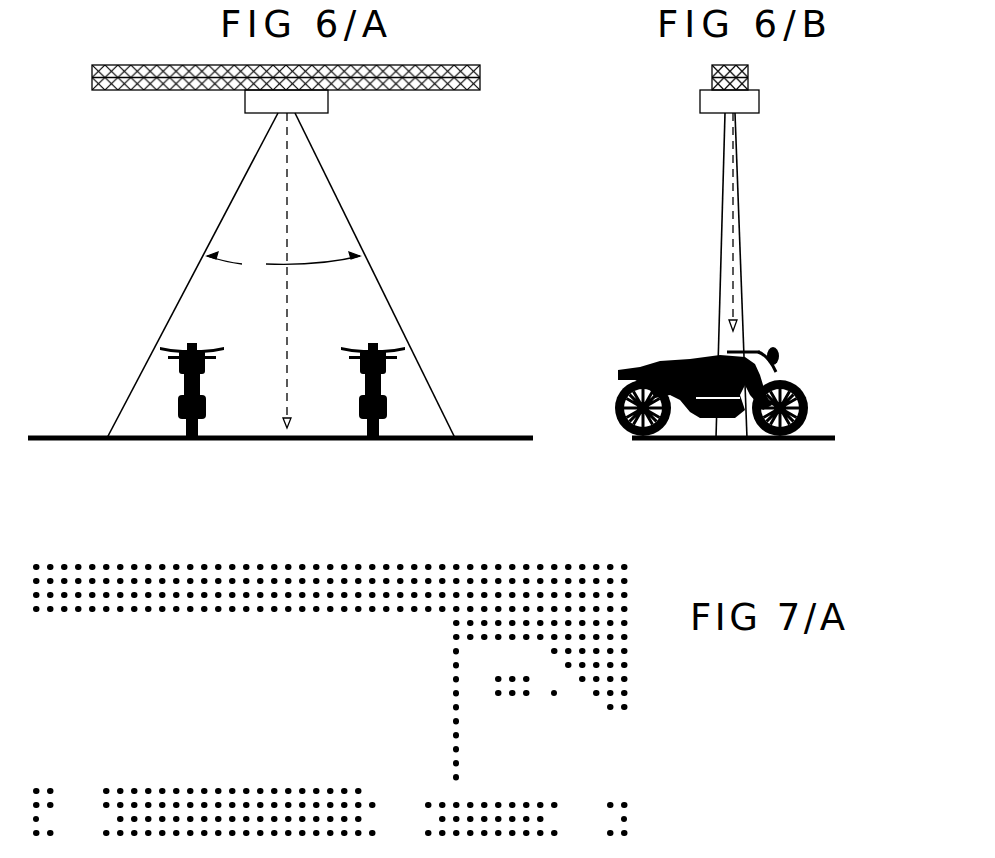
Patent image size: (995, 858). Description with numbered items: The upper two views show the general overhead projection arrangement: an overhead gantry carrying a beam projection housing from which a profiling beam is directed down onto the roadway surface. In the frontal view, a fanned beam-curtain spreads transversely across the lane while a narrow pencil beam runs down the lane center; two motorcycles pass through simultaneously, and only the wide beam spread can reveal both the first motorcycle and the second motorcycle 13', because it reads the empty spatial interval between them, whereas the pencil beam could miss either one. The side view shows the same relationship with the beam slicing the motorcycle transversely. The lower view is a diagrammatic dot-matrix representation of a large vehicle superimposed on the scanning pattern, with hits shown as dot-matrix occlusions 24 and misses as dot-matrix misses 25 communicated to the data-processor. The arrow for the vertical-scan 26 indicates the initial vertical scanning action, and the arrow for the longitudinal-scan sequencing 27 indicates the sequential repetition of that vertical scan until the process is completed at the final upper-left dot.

The motorcycle 13' is at (350, 391).
The longitudinal-scan sequencing 27 is at (567, 547).
The dot-matrix misses 25 is at (637, 702).
The dot-matrix occlusions 24 is at (630, 733).
The vertical-scan 26 is at (630, 832).